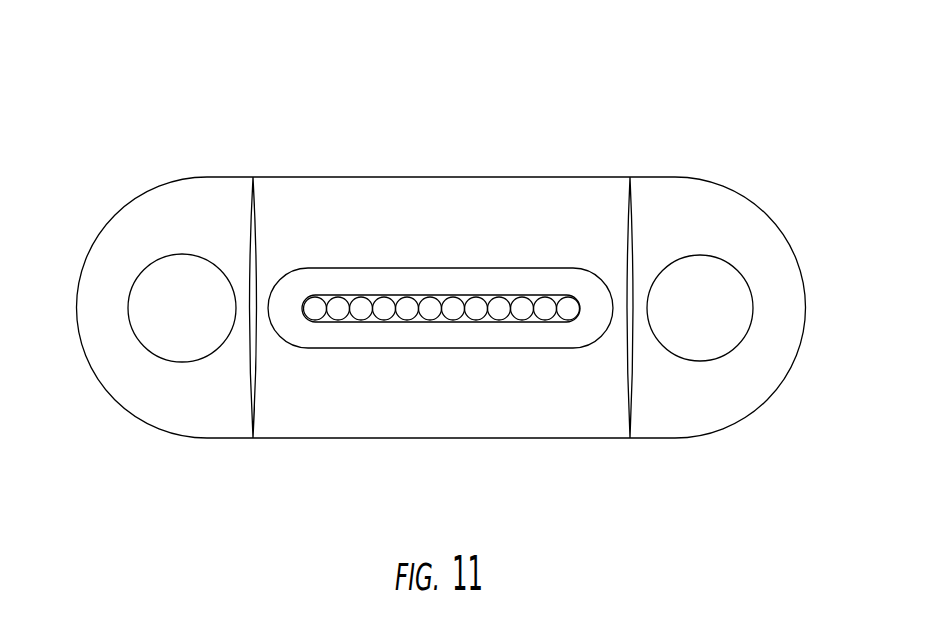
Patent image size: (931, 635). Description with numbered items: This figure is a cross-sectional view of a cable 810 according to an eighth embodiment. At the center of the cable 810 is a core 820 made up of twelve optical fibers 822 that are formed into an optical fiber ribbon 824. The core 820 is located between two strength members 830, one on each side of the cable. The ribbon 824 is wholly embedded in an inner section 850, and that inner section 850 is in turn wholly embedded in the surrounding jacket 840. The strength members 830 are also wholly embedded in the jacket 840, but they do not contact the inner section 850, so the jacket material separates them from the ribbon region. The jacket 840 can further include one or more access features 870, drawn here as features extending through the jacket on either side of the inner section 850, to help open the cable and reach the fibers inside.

The cable 810 is at (138, 115).
The core 820 is at (543, 333).
The optical fibers 822 is at (430, 313).
The optical fiber ribbon 824 is at (488, 322).
The strength members 830 is at (178, 267).
The jacket 840 is at (462, 204).
The inner section 850 is at (390, 280).
The access feature 870 is at (253, 177).